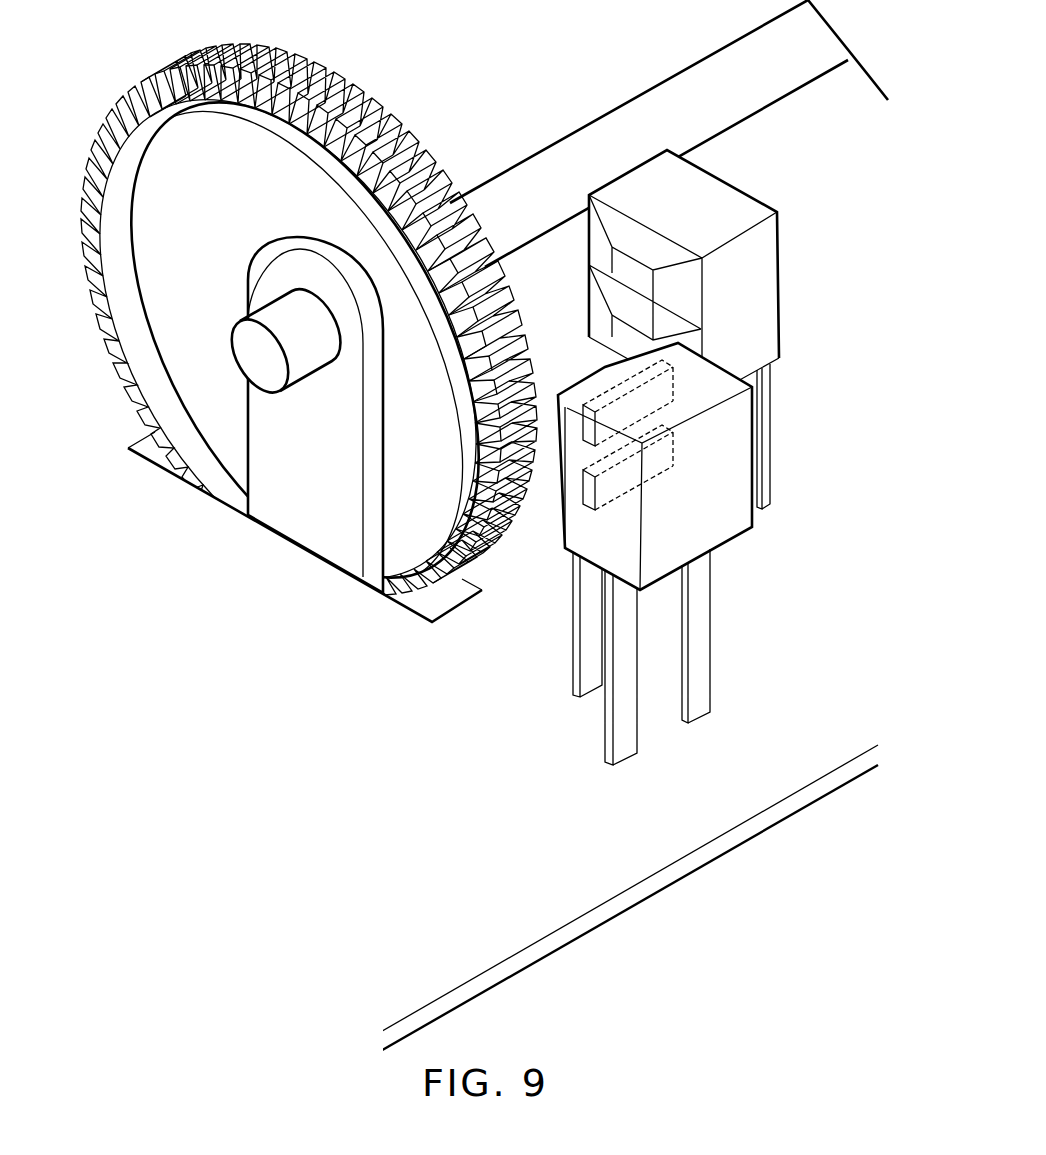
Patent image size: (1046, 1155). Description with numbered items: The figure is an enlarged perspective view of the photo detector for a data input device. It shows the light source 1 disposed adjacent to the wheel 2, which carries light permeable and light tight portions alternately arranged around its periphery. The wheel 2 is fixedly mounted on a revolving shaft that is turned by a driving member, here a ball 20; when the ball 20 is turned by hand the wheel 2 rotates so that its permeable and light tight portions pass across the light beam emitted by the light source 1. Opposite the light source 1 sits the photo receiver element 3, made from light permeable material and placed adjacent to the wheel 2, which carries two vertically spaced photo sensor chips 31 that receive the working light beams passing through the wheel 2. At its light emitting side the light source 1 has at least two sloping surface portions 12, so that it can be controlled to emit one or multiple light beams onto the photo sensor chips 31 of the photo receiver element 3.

The light source 1 is at (720, 200).
The sloping surface portions 12 is at (680, 293).
The wheel 2 is at (192, 232).
The ball 20 is at (283, 322).
The photo receiver element 3 is at (715, 507).
The photo sensor chips 31 is at (612, 490).